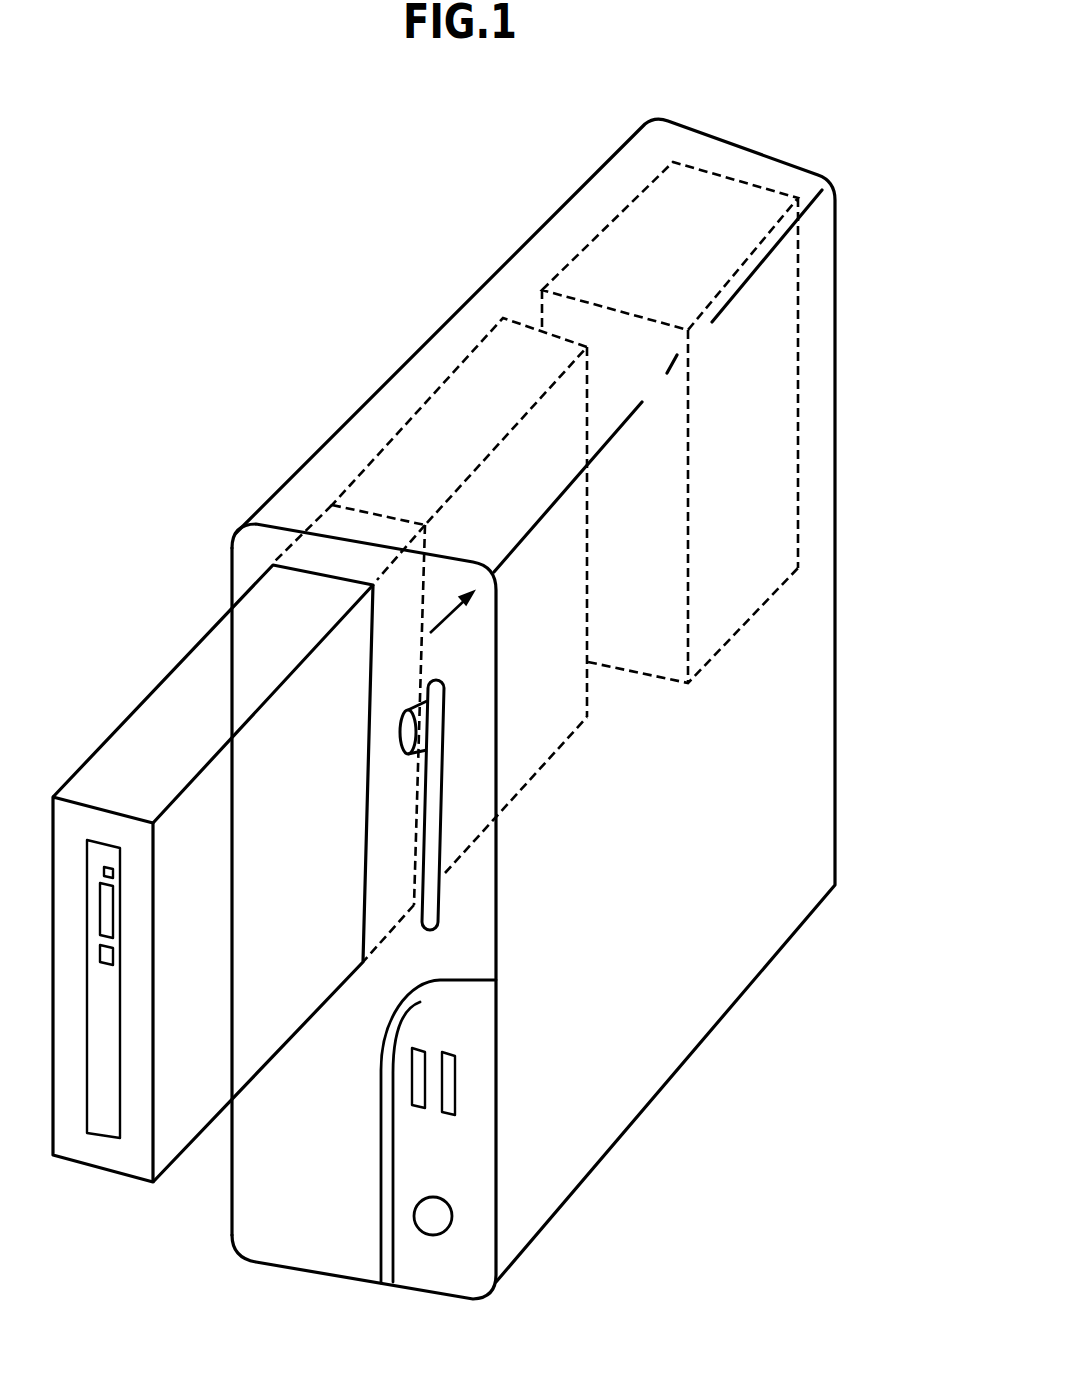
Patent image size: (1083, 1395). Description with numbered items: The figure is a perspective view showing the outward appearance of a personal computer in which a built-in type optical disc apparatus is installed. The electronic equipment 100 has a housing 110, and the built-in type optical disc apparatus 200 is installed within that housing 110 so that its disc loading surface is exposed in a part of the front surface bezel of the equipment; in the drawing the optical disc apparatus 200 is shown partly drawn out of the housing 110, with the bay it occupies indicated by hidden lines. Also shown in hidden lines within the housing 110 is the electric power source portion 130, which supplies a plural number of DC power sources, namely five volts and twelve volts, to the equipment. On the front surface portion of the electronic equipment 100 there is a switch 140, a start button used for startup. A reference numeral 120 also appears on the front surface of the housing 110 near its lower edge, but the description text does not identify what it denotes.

The electronic equipment 100 is at (579, 737).
The housing 110 is at (579, 737).
The front panel 120 is at (315, 1240).
The electric power source portion 130 is at (778, 417).
The switch 140 is at (430, 1215).
The built-in type optical disc apparatus 200 is at (143, 737).